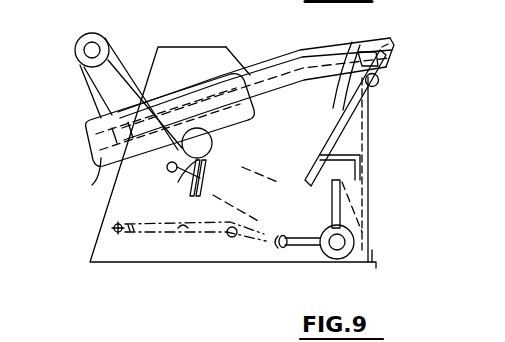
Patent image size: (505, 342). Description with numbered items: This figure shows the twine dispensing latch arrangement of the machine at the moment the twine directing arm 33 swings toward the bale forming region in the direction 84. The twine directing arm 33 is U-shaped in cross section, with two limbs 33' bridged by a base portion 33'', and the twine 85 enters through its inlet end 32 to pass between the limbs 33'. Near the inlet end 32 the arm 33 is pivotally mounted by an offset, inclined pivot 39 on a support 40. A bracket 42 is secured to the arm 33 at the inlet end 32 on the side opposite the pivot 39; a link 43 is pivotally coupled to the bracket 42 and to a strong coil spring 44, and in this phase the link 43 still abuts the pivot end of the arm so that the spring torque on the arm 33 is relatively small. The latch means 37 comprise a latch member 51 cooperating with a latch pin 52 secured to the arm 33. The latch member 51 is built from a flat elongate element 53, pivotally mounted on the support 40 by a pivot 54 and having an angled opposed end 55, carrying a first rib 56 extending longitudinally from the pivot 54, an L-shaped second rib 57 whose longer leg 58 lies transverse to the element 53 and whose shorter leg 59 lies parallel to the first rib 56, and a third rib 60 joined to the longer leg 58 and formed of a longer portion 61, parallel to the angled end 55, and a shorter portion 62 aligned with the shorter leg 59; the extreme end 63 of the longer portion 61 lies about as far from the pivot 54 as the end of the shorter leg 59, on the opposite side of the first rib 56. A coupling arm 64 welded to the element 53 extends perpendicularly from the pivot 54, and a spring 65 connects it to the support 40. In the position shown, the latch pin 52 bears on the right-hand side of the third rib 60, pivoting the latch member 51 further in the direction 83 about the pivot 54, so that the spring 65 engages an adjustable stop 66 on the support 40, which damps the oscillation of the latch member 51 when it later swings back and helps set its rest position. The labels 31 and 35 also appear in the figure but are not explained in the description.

The direction of movement arrow 31 is at (88, 151).
The inlet end 32 is at (89, 135).
The twine directing arm 33 is at (256, 80).
The limbs 33' is at (231, 49).
The base portion 33'' is at (295, 166).
The rack teeth 35 is at (270, 64).
The latch means 37 is at (375, 130).
The pivot 39 is at (214, 140).
The support 40 is at (113, 262).
The bracket 42 is at (143, 88).
The link 43 is at (100, 110).
The coil spring 44 is at (206, 192).
The latch member 51 is at (372, 262).
The latch pin 52 is at (380, 81).
The elongate element 53 is at (342, 222).
The pivot 54 is at (337, 259).
The opposed end 55 is at (336, 114).
The first rib 56 is at (340, 214).
The second rib 57 is at (368, 178).
The longer leg 58 is at (366, 153).
The shorter leg 59 is at (364, 210).
The third rib 60 is at (355, 105).
The longer portion 61 is at (348, 128).
The shorter portion 62 is at (380, 60).
The extreme end 63 is at (306, 188).
The coupling arm 64 is at (298, 246).
The spring 65 is at (155, 240).
The stop 66 is at (230, 238).
The direction 83 is at (382, 47).
The direction 84 is at (303, 27).
The twine 85 is at (92, 185).